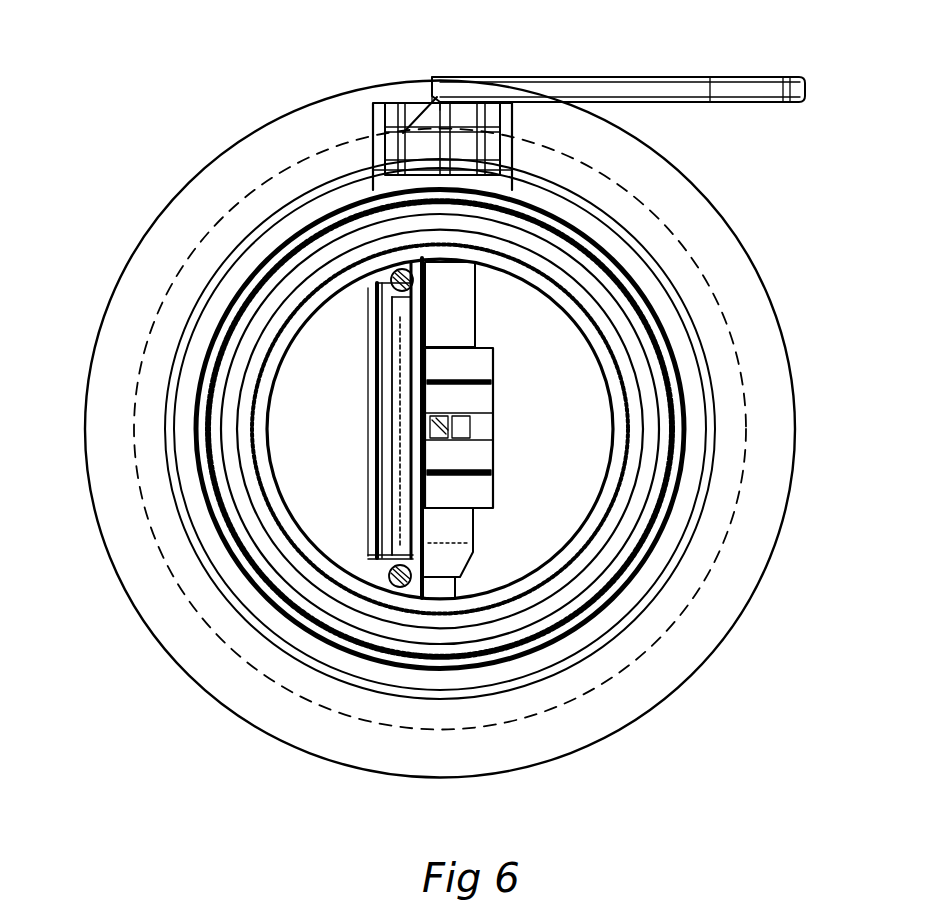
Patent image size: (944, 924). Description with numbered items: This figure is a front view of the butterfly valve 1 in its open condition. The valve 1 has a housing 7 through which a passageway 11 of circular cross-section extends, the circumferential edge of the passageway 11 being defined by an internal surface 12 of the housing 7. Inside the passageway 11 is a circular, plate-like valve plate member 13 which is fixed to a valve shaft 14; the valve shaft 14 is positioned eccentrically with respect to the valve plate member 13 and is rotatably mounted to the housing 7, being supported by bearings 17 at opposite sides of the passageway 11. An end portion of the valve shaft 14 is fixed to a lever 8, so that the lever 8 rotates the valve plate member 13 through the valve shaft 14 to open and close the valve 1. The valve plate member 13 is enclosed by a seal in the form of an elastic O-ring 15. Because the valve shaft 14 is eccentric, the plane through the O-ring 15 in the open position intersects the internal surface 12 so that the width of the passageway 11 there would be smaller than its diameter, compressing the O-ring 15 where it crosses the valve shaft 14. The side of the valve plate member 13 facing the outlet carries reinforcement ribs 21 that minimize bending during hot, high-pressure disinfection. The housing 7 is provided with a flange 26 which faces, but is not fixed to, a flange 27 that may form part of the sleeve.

The butterfly valve 1 is at (100, 160).
The housing 7 is at (702, 428).
The lever 8 is at (653, 85).
The passageway 11 is at (563, 467).
The internal surface 12 is at (585, 518).
The valve plate member 13 is at (397, 540).
The valve shaft 14 is at (585, 600).
The O-ring 15 is at (385, 617).
The bearings 17 is at (485, 240).
The reinforcement ribs 21 is at (457, 468).
The flange 26 is at (773, 486).
The flange 27 is at (723, 510).